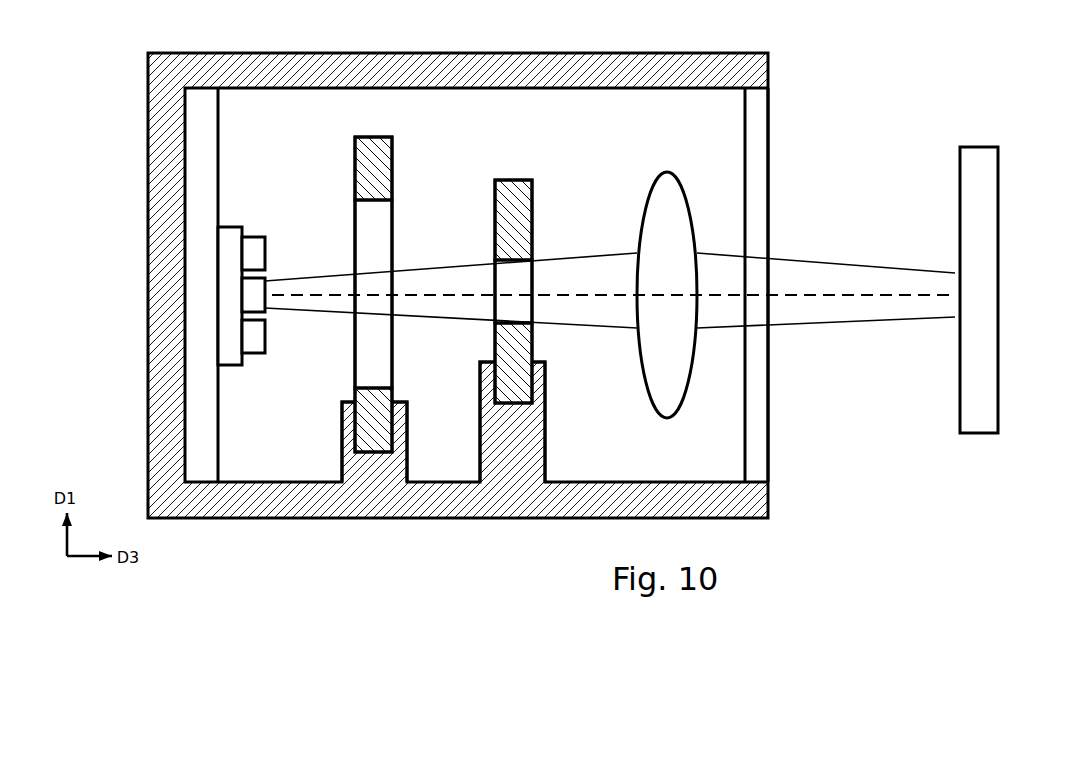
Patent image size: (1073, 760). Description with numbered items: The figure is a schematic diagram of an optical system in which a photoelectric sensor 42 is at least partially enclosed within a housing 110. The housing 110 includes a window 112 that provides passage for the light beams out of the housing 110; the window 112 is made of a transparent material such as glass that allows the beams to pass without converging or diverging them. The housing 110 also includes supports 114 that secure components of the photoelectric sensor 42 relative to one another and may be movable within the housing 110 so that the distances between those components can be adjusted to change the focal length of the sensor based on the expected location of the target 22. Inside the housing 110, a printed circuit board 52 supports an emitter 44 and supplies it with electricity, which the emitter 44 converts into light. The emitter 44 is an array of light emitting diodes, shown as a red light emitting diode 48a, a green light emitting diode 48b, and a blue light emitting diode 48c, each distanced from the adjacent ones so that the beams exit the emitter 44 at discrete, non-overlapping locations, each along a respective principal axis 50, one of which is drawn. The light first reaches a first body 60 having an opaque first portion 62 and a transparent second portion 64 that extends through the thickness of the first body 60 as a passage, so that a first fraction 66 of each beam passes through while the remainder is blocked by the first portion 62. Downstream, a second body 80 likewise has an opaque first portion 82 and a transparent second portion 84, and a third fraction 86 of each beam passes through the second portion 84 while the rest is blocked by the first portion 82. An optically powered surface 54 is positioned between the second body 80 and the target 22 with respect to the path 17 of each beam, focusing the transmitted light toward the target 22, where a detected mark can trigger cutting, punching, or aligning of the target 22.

The photoelectric sensor 42 is at (458, 259).
The housing 110 is at (422, 285).
The window 112 is at (793, 285).
The support 114 is at (443, 422).
The printed circuit board 52 is at (244, 285).
The emitter 44 is at (253, 264).
The red light emitting diode 48a is at (280, 361).
The green light emitting diode 48b is at (290, 277).
The blue light emitting diode 48c is at (278, 230).
The first body 60 is at (387, 276).
The first portion of first body 62 is at (345, 168).
The second portion of first body 64 is at (345, 398).
The first fraction 66 is at (415, 294).
The second body 80 is at (530, 272).
The first portion of second body 82 is at (484, 220).
The second portion of second body 84 is at (546, 273).
The third fraction 86 is at (560, 363).
The optically powered surface 54 is at (642, 295).
The principal axis 50 is at (613, 323).
The path 17 is at (610, 280).
The target 22 is at (1003, 277).